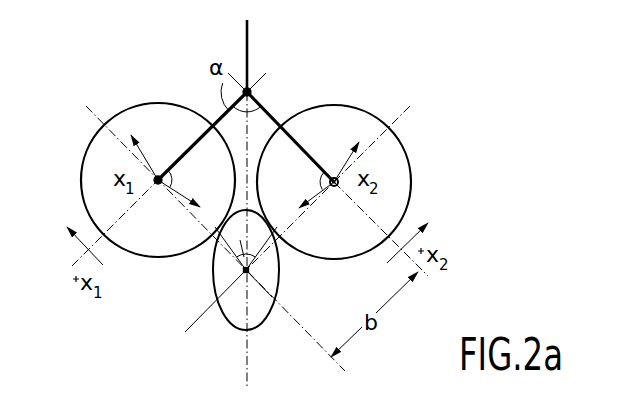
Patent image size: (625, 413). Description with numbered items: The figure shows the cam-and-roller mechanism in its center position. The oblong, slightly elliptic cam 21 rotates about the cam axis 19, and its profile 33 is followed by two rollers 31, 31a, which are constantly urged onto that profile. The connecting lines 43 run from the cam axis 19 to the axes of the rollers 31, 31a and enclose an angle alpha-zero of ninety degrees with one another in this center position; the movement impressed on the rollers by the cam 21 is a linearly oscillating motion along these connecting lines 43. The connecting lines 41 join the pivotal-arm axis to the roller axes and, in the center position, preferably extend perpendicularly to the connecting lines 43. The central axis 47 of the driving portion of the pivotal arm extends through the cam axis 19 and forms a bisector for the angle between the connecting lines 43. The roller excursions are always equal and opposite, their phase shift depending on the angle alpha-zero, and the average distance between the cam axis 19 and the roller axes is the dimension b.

The central axis of the driving portion of the pivotal arm 47 is at (250, 48).
The roller 31 is at (156, 126).
The roller 31a is at (350, 122).
The connecting lines between the pivotal-arm axis and the roller axes 41 is at (218, 118).
The connecting lines between the cam axis and the roller axes 43 is at (203, 228).
The profile of the cam 33 is at (278, 281).
The cam axis 19 is at (232, 298).
The cam 21 is at (258, 313).